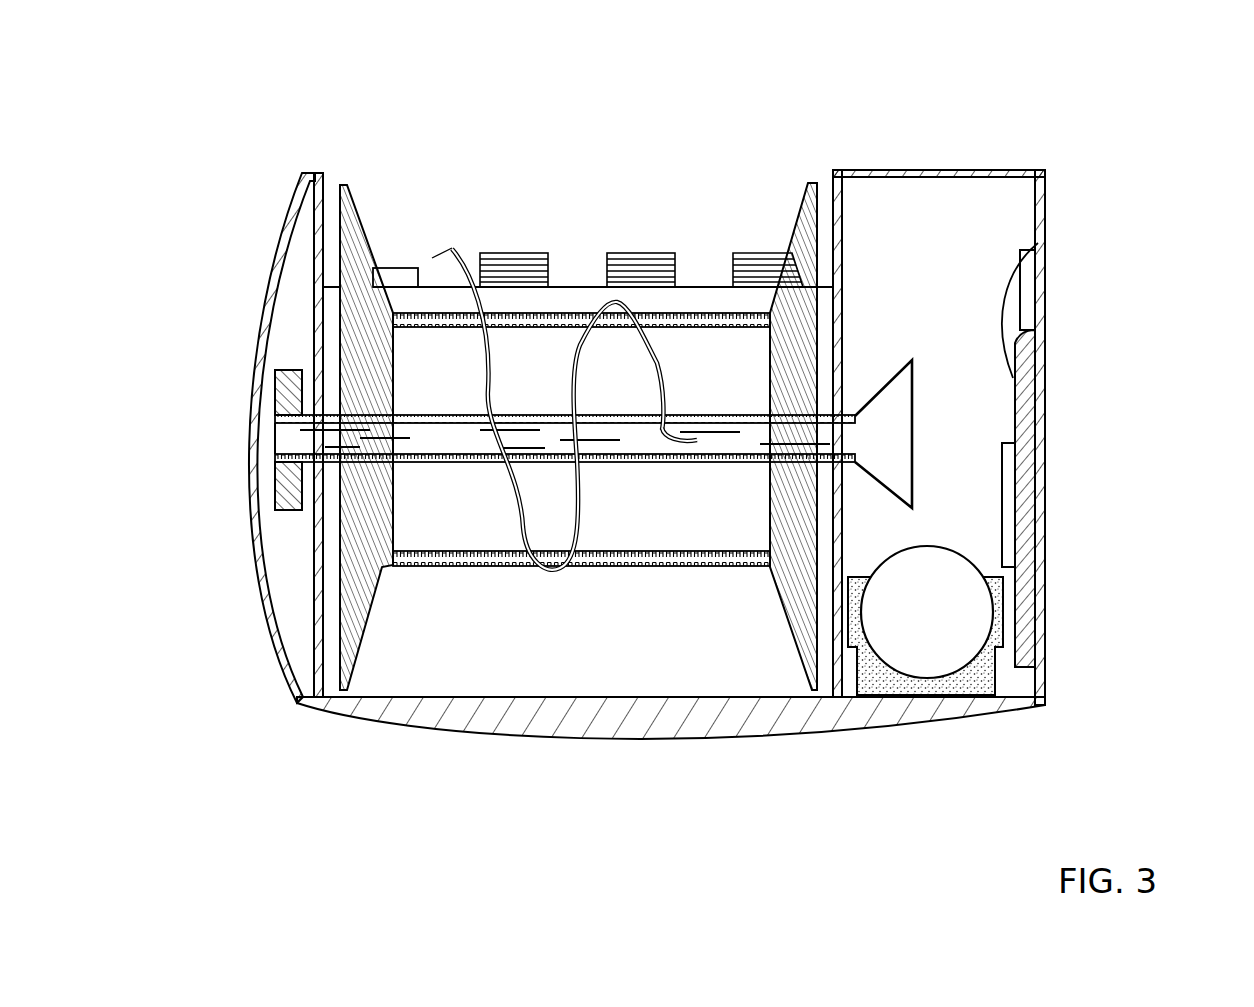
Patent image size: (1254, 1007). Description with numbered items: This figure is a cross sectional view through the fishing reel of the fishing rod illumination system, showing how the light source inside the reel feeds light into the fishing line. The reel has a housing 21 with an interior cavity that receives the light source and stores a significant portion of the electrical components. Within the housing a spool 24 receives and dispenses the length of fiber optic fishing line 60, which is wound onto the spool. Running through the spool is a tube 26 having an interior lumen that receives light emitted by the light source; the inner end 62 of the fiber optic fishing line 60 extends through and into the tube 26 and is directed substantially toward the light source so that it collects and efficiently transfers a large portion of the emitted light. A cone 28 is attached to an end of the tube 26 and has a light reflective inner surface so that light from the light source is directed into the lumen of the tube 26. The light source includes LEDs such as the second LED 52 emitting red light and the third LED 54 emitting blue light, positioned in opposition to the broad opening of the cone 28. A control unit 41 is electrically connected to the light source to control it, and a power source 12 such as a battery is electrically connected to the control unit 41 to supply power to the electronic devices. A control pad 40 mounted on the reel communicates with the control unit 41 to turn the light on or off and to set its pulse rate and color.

The power source 12 is at (928, 628).
The housing 21 is at (717, 720).
The spool 24 is at (355, 243).
The tube 26 is at (622, 463).
The cone 28 is at (883, 397).
The control pad 40 is at (583, 232).
The control unit 41 is at (1023, 523).
The second LED 52 is at (1007, 477).
The third LED 54 is at (1030, 280).
The fiber optic fishing line 60 is at (455, 248).
The inner end 62 is at (700, 433).